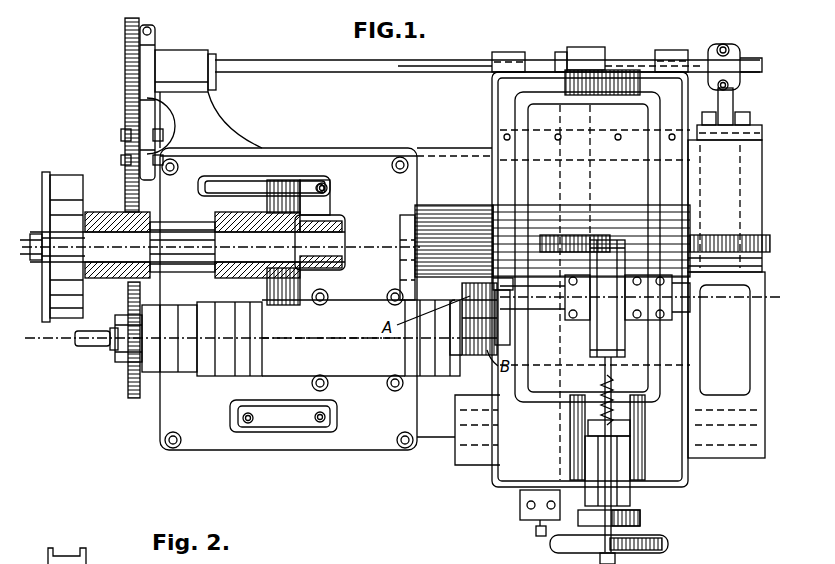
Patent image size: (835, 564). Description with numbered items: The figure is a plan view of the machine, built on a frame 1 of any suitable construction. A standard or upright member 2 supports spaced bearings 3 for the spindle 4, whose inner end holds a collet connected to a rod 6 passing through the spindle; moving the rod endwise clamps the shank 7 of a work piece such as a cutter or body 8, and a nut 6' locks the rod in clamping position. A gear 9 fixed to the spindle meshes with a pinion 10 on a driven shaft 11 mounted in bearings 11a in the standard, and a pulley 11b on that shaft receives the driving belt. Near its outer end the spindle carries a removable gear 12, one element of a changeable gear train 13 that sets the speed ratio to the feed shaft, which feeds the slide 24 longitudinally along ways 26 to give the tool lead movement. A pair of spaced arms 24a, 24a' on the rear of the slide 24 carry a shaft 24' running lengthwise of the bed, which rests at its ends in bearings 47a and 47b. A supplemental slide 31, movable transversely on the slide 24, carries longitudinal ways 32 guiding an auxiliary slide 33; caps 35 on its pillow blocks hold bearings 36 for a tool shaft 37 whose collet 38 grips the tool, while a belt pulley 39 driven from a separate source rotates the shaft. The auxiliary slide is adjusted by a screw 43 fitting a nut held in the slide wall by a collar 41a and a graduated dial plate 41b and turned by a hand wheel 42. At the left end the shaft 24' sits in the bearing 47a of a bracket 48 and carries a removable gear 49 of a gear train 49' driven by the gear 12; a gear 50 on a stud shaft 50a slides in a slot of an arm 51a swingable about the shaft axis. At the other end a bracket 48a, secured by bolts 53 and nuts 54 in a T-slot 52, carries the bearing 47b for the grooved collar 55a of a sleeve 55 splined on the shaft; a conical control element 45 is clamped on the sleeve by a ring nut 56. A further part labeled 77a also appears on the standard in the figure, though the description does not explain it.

The frame 1 is at (365, 440).
The standard or upright member 2 is at (316, 290).
The bearings 3 is at (600, 30).
The spindle 4 is at (168, 318).
The rod 6 is at (242, 351).
The nut 6' is at (121, 348).
The shank 7 is at (475, 355).
The cutter or body 8 is at (467, 338).
The gear 9 is at (278, 300).
The pinion 10 is at (310, 222).
The driven shaft 11 is at (340, 246).
The bearings 11a is at (98, 212).
The pulley 11b is at (62, 190).
The removable gear 12 is at (134, 398).
The gear train 13 is at (128, 222).
The slide 24 is at (726, 365).
The shaft 24' is at (487, 86).
The arm 24a is at (507, 51).
The arm 24a' is at (675, 50).
The ways 26 is at (765, 372).
The supplemental slide 31 is at (505, 120).
The ways 32 is at (680, 178).
The auxiliary slide 33 is at (520, 99).
The caps 35 is at (698, 306).
The bearings 36 is at (678, 325).
The shaft 37 is at (492, 338).
The socket or collet 38 is at (502, 288).
The driving element 39 is at (607, 396).
The collar 41a is at (630, 428).
The dial plate 41b is at (640, 518).
The hand wheel 42 is at (660, 538).
The screw 43 is at (614, 408).
The control element 45 is at (604, 64).
The bearing 47a is at (185, 71).
The bearing 47b is at (738, 58).
The bracket 48 is at (212, 125).
The bracket 48a is at (733, 100).
The removable gear 49 is at (117, 115).
The gear train 49' is at (126, 102).
The gear 50 is at (122, 140).
The stud shaft 50a is at (164, 136).
The arm 51a is at (150, 118).
The T-slot 52 is at (762, 134).
The bolts 53 is at (725, 206).
The nuts 54 is at (742, 112).
The sleeve 55 is at (632, 70).
The grooved collar 55a is at (712, 55).
The ring nut 56 is at (566, 56).
The boss 77a is at (240, 190).